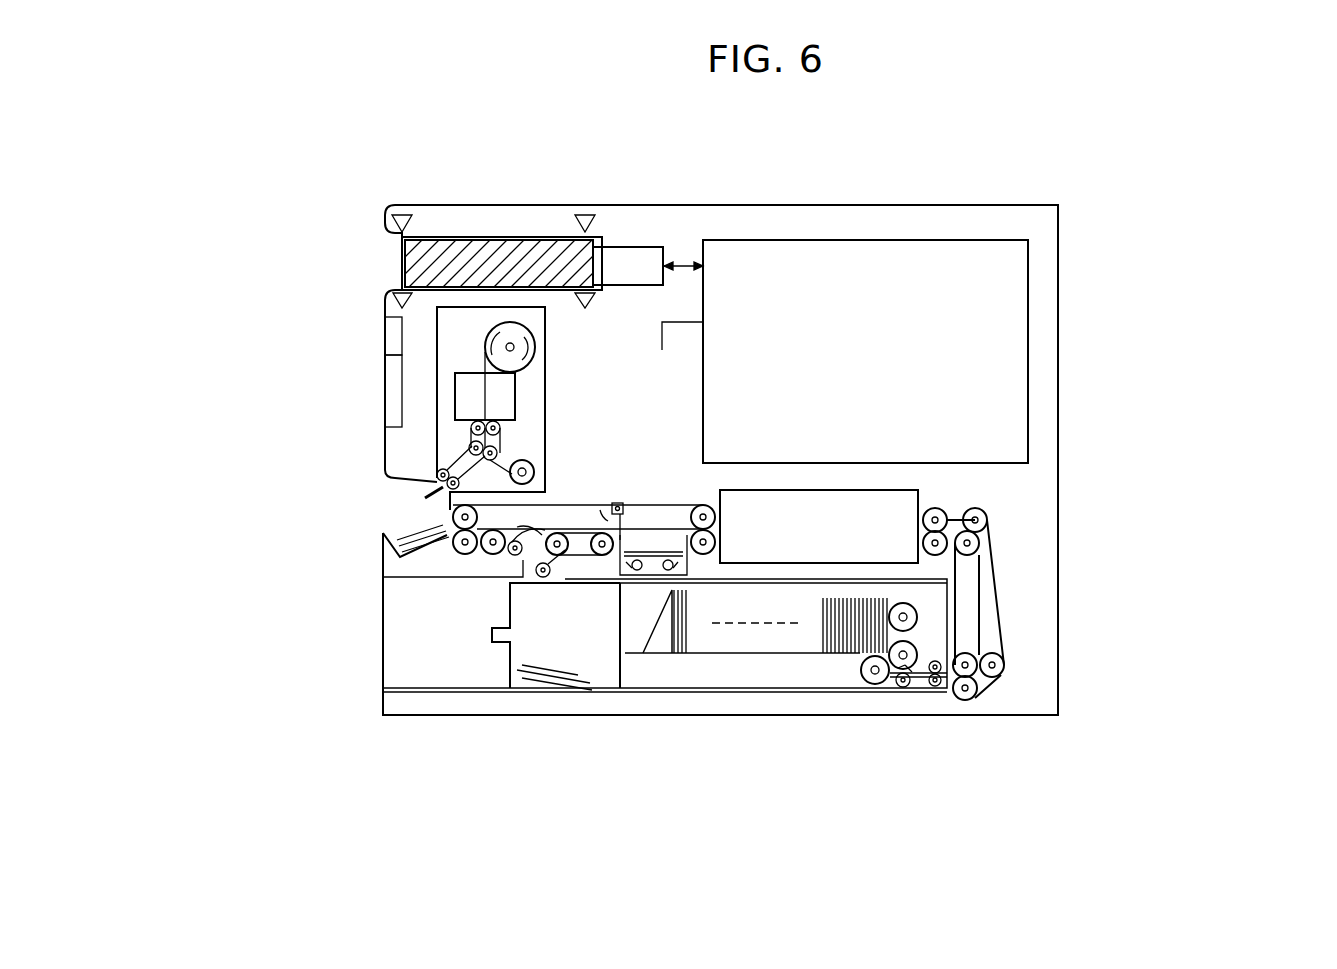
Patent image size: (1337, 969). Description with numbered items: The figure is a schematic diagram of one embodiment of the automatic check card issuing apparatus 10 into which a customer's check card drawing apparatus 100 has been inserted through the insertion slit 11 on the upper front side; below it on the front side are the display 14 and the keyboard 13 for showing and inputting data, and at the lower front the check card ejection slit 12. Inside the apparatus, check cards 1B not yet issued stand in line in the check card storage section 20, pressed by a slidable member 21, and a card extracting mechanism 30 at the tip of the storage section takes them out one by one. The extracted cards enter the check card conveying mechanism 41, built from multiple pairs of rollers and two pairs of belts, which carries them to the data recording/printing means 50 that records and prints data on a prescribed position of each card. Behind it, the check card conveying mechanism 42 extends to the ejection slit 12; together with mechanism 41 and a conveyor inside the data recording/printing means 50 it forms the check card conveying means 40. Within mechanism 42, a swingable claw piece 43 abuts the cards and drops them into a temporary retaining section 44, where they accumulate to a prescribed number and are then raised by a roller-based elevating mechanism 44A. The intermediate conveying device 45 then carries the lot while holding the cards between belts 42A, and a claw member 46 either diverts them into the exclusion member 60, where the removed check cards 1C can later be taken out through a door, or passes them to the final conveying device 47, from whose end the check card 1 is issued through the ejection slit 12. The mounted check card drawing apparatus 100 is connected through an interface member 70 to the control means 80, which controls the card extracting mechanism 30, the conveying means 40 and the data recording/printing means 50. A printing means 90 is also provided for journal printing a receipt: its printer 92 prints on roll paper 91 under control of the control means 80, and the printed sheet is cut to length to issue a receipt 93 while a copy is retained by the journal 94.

The automatic check card issuing apparatus 10 is at (847, 200).
The insertion slit 11 is at (390, 253).
The check card ejection slit 12 is at (400, 527).
The keyboard 13 is at (382, 385).
The display 14 is at (382, 330).
The check card 1 is at (420, 546).
The check cards 1B is at (692, 655).
The check cards 1C is at (528, 650).
The check card storage section 20 is at (783, 692).
The slidable member 21 is at (657, 647).
The card extracting mechanism 30 is at (915, 682).
The check card conveying means 40 is at (1142, 568).
The check card conveying mechanism 41 is at (1005, 585).
The check card conveying mechanism 42 is at (704, 507).
The belts 42A is at (700, 507).
The claw piece 43 is at (623, 518).
The temporary retaining section 44 is at (658, 543).
The elevating mechanism 44A is at (655, 568).
The intermediate conveying device 45 is at (580, 548).
The claw member 46 is at (533, 545).
The final conveying device 47 is at (478, 557).
The data recording/printing means 50 is at (905, 500).
The exclusion member 60 is at (496, 691).
The interface member 70 is at (637, 247).
The control means 80 is at (963, 240).
The printing means 90 is at (501, 408).
The roll paper 91 is at (490, 333).
The printer 92 is at (470, 373).
The receipt 93 is at (425, 494).
The journal 94 is at (520, 460).
The check card drawing apparatus 100 is at (502, 238).